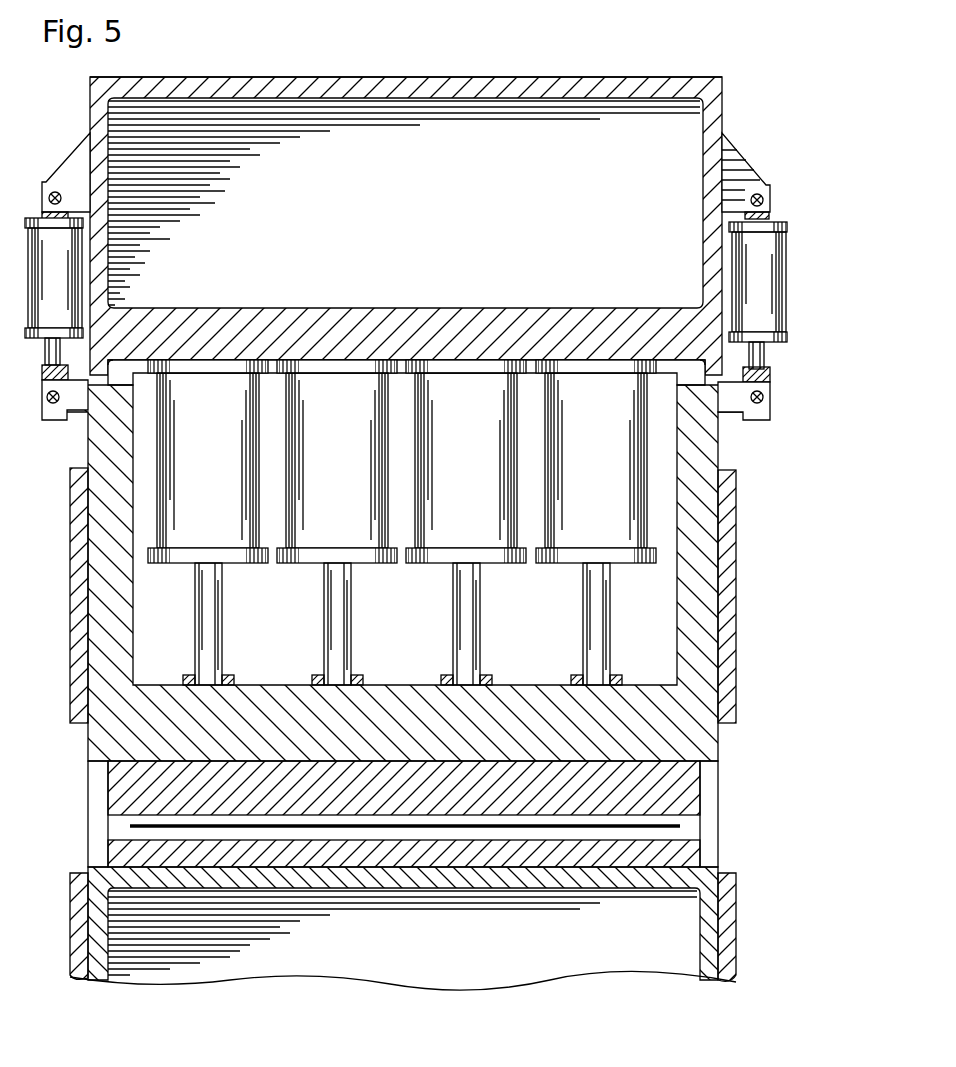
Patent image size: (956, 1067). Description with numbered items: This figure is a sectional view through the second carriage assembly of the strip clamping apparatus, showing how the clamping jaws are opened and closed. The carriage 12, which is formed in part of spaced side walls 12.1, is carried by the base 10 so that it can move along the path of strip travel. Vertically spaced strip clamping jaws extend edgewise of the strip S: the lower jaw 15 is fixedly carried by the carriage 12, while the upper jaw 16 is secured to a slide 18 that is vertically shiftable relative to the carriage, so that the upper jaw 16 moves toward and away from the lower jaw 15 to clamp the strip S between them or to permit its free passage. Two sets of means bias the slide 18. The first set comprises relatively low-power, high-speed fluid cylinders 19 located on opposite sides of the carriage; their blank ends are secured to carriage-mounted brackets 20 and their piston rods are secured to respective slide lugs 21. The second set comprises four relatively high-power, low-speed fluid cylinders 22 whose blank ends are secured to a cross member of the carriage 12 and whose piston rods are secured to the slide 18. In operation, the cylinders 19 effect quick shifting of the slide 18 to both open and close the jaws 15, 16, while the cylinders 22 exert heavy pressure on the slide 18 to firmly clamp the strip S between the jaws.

The base 10 is at (78, 910).
The carriage assembly 12 is at (394, 68).
The side walls 12.1 is at (236, 90).
The lower jaw 15 is at (452, 858).
The upper jaw 16 is at (670, 795).
The slide 18 is at (393, 703).
The fluid cylinders 19 is at (42, 310).
The brackets 20 is at (68, 180).
The slide lugs 21 is at (85, 402).
The fluid cylinders 22 is at (302, 540).
The sheet S is at (128, 826).